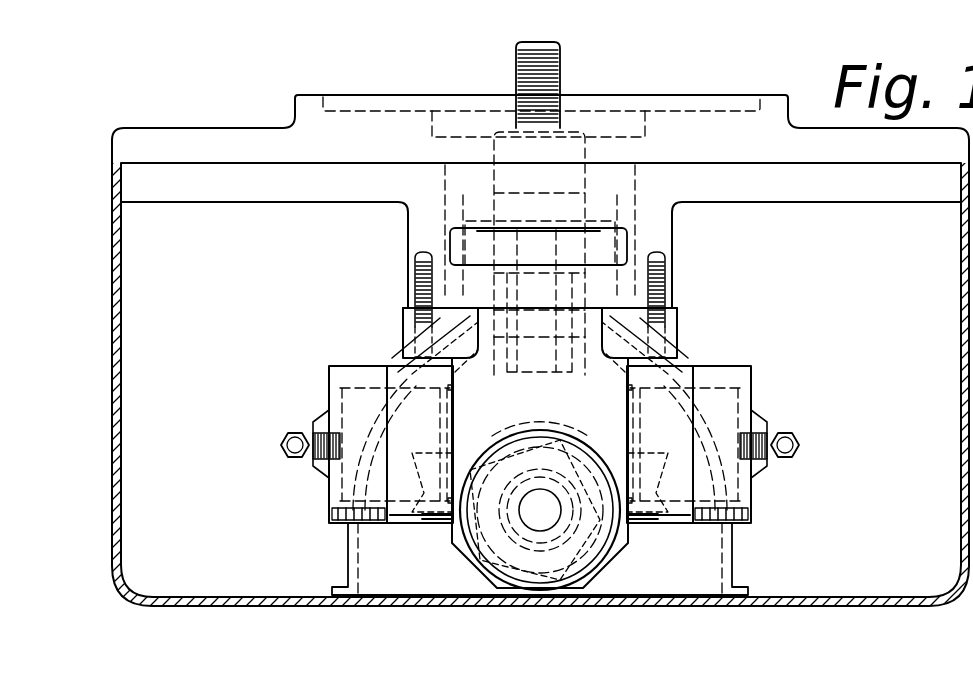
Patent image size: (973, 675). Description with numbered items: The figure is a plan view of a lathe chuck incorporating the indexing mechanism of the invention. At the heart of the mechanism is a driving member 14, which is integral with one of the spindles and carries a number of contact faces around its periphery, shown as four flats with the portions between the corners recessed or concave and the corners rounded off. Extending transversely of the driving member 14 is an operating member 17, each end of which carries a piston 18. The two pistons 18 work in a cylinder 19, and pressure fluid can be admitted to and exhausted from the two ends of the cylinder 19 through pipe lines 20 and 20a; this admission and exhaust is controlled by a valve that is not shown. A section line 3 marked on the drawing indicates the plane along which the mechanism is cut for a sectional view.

The section line 3- 3 is at (598, 28).
The driving member 14 is at (512, 520).
The operating member 17 is at (503, 417).
The piston 18 is at (446, 428).
The cylinder 19 is at (716, 373).
The pipe line 20 is at (398, 366).
The pipe line 20a is at (640, 336).